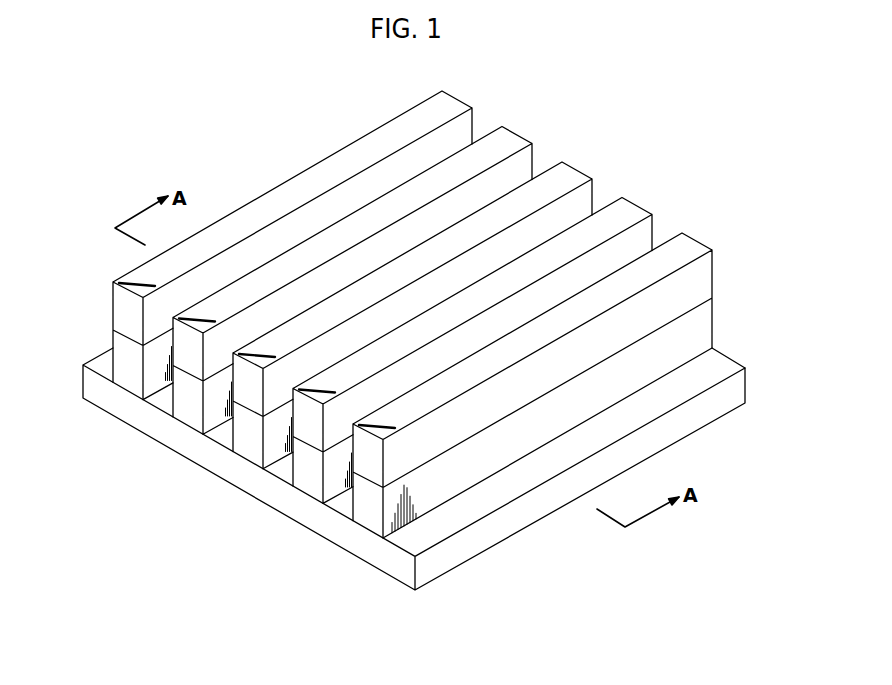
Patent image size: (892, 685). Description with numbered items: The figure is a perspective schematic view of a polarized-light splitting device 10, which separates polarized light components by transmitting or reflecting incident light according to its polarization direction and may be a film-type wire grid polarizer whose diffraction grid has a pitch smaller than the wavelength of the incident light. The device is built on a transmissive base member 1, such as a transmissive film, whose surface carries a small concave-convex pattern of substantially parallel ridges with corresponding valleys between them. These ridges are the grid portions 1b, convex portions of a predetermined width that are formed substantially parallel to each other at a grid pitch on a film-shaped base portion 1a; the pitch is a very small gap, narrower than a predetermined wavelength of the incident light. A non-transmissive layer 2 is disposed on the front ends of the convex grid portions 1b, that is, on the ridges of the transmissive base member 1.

The polarized-light splitting device 10 is at (288, 121).
The transmissive base member 1 is at (145, 468).
The base portion 1a is at (250, 488).
The grid portions 1b is at (215, 432).
The non-transmissive layer 2 is at (549, 395).